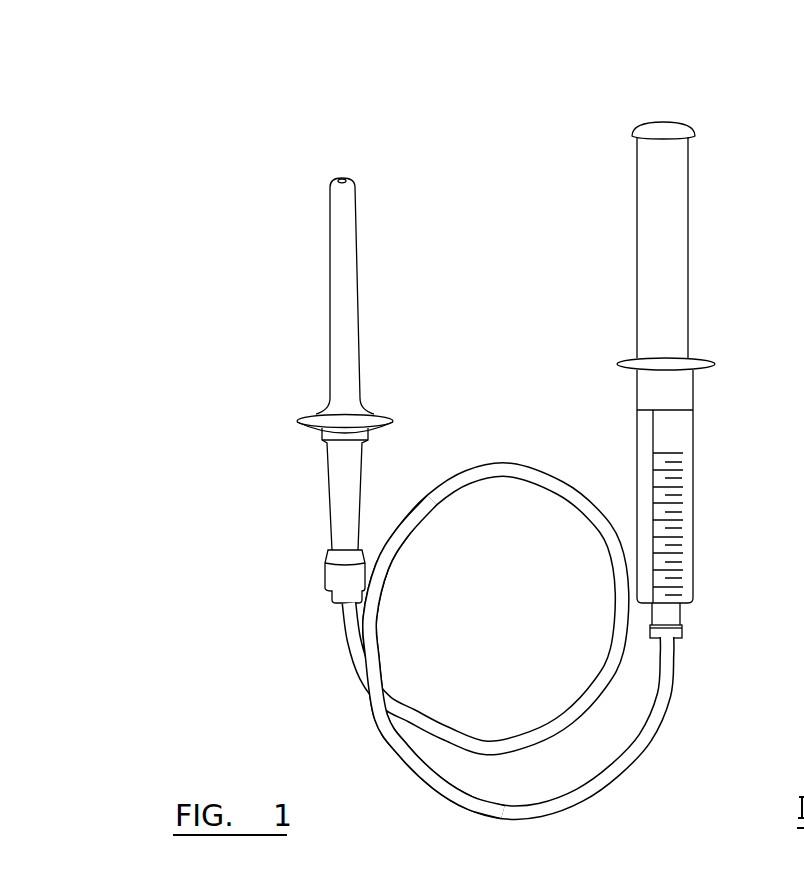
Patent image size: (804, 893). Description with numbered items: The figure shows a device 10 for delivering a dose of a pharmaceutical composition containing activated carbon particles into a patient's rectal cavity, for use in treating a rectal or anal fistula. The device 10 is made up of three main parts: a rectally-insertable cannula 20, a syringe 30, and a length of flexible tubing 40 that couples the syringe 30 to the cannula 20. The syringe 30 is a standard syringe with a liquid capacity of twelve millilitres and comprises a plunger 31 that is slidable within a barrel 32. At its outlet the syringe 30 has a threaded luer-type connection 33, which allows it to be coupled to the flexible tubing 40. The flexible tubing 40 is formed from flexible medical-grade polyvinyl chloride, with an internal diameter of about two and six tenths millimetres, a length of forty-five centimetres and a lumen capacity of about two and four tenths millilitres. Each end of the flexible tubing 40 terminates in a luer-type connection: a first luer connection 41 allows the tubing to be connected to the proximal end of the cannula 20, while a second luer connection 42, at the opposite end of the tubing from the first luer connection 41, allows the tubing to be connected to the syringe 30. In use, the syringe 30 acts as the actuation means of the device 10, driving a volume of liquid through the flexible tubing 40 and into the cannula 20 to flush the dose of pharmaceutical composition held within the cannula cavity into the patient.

The device 10 is at (502, 474).
The rectally-insertable cannula 20 is at (315, 288).
The syringe 30 is at (665, 382).
The plunger 31 is at (660, 205).
The barrel 32 is at (688, 483).
The threaded luer-type connection 33 is at (672, 617).
The flexible tubing 40 is at (407, 760).
The first luer connection 41 is at (336, 599).
The second luer connection 42 is at (682, 637).